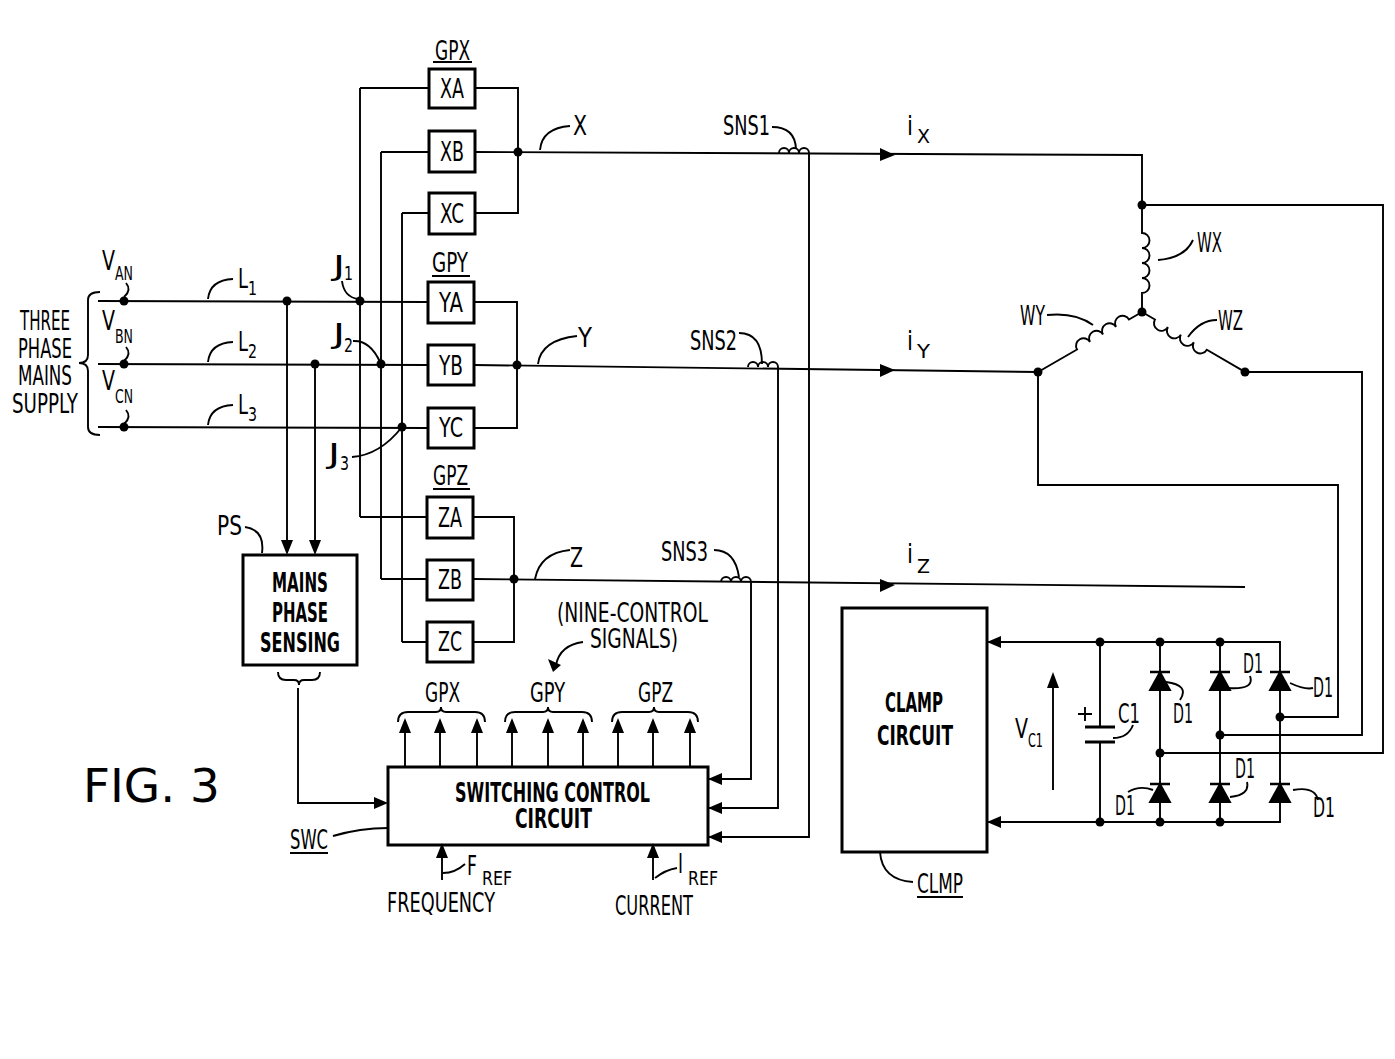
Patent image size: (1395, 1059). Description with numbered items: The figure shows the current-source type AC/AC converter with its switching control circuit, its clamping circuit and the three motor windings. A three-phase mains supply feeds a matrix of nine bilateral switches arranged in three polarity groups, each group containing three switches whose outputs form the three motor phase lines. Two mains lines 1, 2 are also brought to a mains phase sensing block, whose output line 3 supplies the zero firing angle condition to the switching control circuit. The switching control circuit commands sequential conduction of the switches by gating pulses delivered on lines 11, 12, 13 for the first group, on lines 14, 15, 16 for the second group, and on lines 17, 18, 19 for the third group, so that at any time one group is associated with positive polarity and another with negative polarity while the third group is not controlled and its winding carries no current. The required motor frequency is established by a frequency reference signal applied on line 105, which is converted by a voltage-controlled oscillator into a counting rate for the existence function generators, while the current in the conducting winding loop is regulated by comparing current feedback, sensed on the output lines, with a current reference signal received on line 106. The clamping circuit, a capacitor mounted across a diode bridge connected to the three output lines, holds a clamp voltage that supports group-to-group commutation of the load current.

The phase B mains input line to mains phase sensing 1 is at (318, 513).
The phase A mains input line to mains phase sensing 2 is at (284, 513).
The line 3 is at (298, 716).
The output line of logic selector circuit SCLX 11 is at (403, 752).
The output line of logic selector circuit SCLX 12 is at (439, 758).
The output line of logic selector circuit SCLX 13 is at (476, 758).
The gating line from logic selector SCLY 14 is at (511, 758).
The gating line from logic selector SCLY 15 is at (547, 758).
The gating line from logic selector SCLY 16 is at (582, 758).
The gating line for group GPZ 17 is at (617, 758).
The gating line for group GPZ 18 is at (652, 758).
The gating line for group GPZ 19 is at (692, 758).
The frequency reference line 105 is at (441, 872).
The current reference line 106 is at (653, 878).